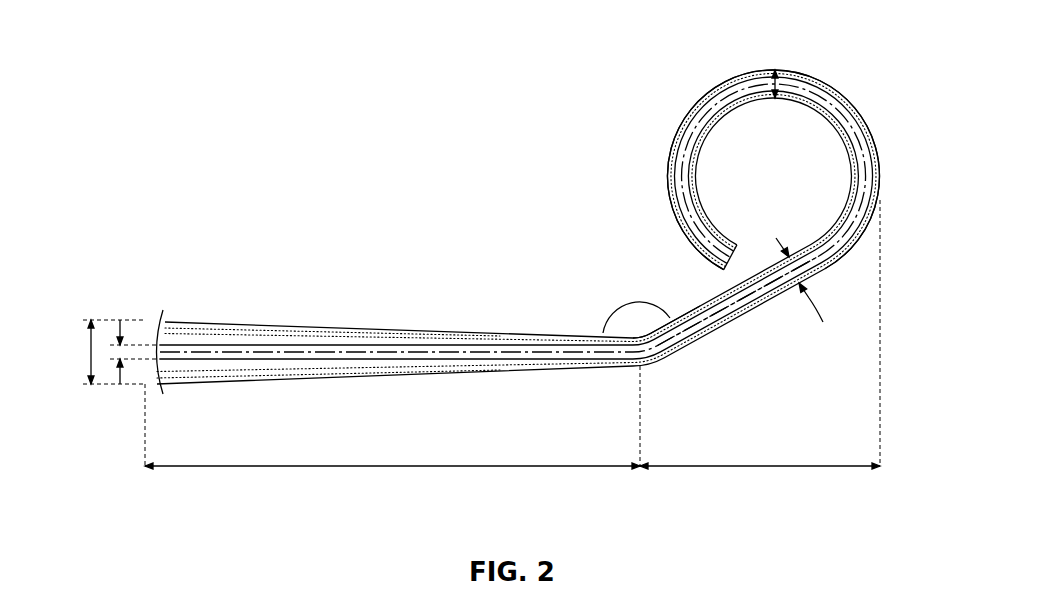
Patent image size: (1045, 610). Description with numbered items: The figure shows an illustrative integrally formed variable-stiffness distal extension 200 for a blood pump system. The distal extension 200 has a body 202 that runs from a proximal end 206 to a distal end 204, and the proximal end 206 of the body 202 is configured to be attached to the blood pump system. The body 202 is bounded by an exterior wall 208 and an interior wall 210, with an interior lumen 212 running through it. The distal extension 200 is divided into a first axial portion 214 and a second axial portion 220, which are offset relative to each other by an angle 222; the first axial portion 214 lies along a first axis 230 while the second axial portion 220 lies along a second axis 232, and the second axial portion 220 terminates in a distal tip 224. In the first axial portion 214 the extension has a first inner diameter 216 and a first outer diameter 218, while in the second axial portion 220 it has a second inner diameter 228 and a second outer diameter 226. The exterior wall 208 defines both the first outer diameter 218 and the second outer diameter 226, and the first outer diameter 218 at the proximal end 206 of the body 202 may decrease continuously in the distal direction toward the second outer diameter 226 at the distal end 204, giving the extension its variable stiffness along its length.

The variable-stiffness distal extension 200 is at (501, 275).
The body 202 is at (460, 331).
The distal end 204 is at (732, 310).
The proximal end 206 is at (283, 380).
The exterior wall 208 is at (452, 373).
The interior wall 210 is at (492, 360).
The interior lumen 212 is at (553, 353).
The first axial portion 214 is at (345, 468).
The first inner diameter 216 is at (116, 378).
The first outer diameter 218 is at (90, 344).
The second axial portion 220 is at (792, 468).
The angle 222 is at (618, 308).
The distal tip 224 is at (880, 162).
The second outer diameter 226 is at (778, 88).
The second inner diameter 228 is at (809, 296).
The first axis 230 is at (633, 356).
The second axis 232 is at (690, 332).